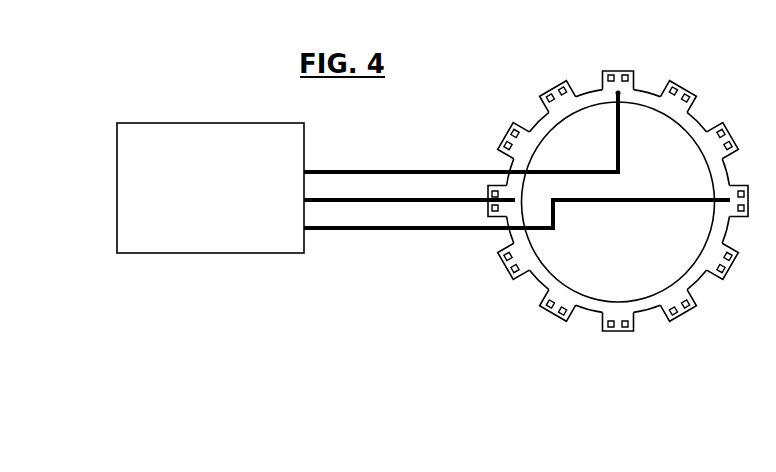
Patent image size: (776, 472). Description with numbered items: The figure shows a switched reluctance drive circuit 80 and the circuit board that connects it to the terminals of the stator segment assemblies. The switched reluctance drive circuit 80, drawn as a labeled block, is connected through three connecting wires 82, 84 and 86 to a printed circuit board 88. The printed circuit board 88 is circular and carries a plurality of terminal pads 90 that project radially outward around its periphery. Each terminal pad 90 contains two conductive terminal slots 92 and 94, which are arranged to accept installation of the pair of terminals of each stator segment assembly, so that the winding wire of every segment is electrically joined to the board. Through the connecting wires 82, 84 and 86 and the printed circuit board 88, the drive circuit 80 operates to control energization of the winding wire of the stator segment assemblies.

The switched reluctance drive circuit 80 is at (184, 122).
The connecting wire 82 is at (421, 170).
The connecting wire 84 is at (381, 202).
The connecting wire 86 is at (428, 230).
The printed circuit board 88 is at (597, 95).
The terminal pad 90 is at (683, 83).
The conductive terminal slot 92 is at (612, 72).
The conductive terminal slot 94 is at (627, 72).